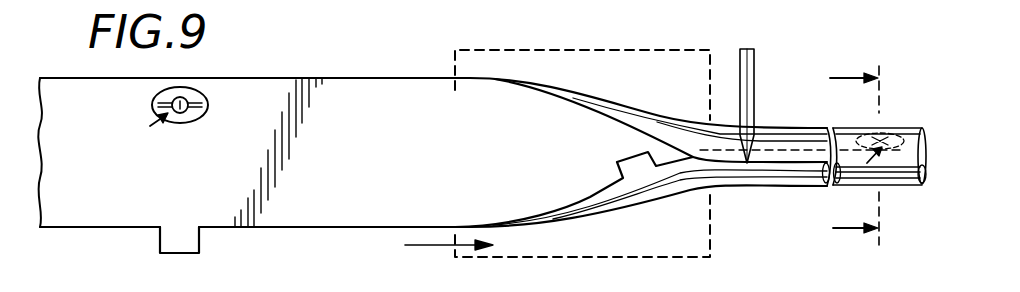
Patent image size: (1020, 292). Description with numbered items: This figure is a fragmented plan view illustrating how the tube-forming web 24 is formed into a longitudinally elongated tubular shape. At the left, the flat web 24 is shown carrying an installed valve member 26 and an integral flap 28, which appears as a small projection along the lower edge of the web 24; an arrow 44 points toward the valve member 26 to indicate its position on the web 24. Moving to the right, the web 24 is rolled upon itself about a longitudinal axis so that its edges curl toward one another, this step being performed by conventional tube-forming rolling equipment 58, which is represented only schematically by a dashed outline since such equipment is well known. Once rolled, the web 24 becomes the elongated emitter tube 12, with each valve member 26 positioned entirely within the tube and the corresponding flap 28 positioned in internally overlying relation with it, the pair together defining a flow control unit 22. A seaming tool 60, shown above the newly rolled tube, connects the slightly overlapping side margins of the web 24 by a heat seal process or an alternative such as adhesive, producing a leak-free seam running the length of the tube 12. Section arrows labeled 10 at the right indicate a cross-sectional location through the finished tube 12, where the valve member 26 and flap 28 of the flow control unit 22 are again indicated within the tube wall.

The section line of the folded tube 10 is at (835, 155).
The emitter tube 12 is at (890, 180).
The flow control unit 22 is at (866, 155).
The web 24 is at (387, 85).
The valve member 26 is at (196, 116).
The flap 28 is at (195, 247).
The direction arrow 44 is at (150, 126).
The tube-forming rolling equipment 58 is at (659, 46).
The seaming tool 60 is at (757, 72).